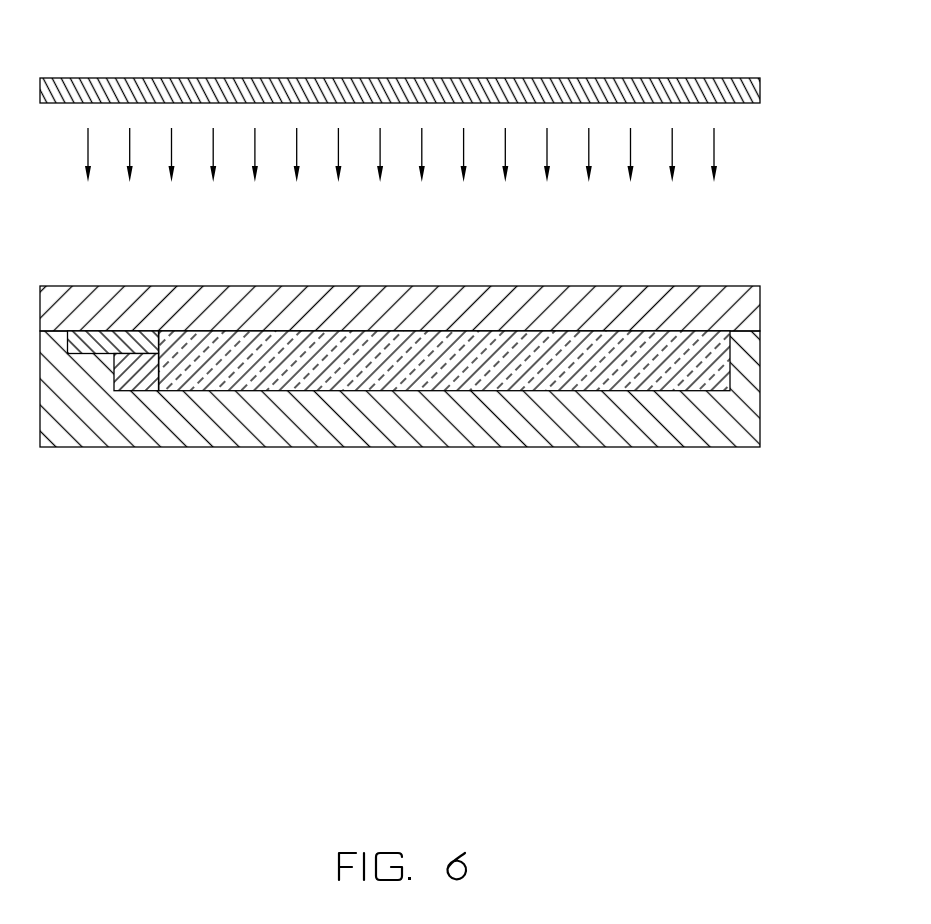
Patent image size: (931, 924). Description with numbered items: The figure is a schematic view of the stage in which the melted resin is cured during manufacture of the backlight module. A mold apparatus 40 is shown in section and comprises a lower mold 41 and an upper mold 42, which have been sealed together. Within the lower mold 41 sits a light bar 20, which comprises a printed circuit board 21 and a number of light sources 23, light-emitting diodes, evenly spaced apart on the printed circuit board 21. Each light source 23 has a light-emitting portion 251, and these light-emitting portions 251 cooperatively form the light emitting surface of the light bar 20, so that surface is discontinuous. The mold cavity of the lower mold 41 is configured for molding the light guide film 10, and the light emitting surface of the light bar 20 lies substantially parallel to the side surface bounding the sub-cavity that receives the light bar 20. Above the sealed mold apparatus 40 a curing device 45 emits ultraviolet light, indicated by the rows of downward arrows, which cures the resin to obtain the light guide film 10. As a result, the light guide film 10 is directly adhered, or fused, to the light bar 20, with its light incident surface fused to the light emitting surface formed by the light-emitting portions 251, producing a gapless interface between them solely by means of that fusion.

The curing device 45 is at (505, 93).
The light guide film 10 is at (372, 350).
The light-emitting portion 251 is at (170, 355).
The light bar 20 is at (105, 438).
The printed circuit board 21 is at (82, 342).
The light source 23 is at (135, 375).
The mold apparatus 40 is at (400, 426).
The lower mold 41 is at (743, 518).
The upper mold 42 is at (687, 312).